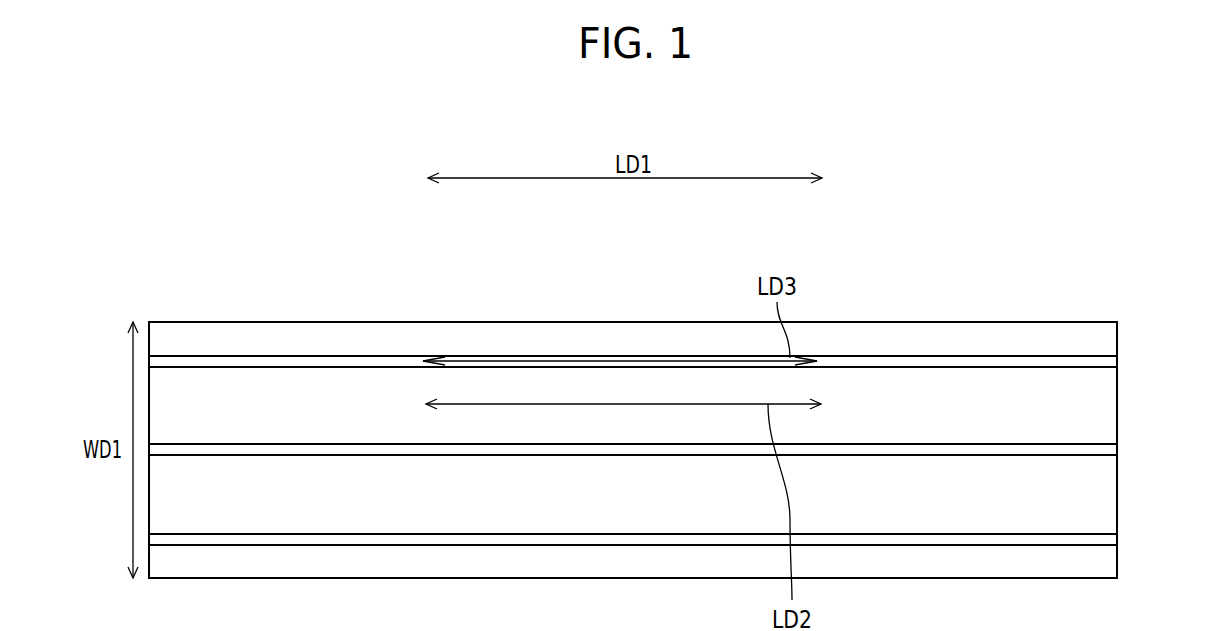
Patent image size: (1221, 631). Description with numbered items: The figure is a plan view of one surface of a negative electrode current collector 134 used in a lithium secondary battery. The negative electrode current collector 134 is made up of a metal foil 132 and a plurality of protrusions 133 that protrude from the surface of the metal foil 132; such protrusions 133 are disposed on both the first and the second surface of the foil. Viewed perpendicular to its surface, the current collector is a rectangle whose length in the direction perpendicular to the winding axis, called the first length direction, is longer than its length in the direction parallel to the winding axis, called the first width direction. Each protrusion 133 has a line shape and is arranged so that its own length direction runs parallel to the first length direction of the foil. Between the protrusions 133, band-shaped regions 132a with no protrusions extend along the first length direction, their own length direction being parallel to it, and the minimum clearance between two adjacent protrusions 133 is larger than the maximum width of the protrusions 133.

The metal foil 132 is at (712, 338).
The band-shaped region 132a is at (1118, 443).
The protrusions 133 is at (980, 358).
The negative electrode current collector 134 is at (1067, 204).